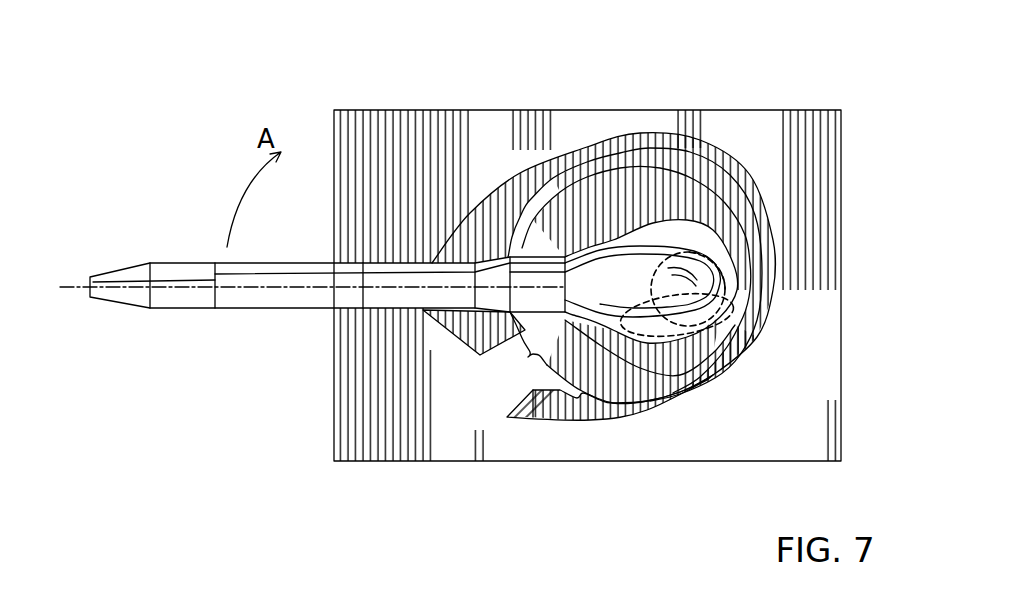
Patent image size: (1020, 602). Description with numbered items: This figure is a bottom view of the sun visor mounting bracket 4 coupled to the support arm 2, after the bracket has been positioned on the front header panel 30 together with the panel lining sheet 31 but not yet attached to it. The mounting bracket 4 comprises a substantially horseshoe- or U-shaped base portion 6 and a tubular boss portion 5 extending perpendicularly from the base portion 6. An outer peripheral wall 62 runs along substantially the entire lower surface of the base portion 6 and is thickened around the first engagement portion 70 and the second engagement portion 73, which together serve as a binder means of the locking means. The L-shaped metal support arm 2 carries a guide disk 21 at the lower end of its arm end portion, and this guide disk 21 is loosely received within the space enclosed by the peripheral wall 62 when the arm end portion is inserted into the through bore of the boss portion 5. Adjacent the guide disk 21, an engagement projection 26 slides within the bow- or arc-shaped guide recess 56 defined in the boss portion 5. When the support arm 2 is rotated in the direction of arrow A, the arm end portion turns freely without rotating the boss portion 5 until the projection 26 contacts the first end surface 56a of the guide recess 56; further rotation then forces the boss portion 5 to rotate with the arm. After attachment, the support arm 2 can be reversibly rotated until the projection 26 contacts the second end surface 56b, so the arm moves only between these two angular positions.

The support arm 2 is at (196, 305).
The sun visor mounting bracket 4 is at (489, 181).
The boss portion 5 is at (745, 248).
The base portion 6 is at (726, 152).
The guide disk 21 is at (620, 190).
The engagement projection 26 is at (705, 335).
The front header panel 30 is at (626, 97).
The panel lining sheet 31 is at (587, 251).
The guide recess 56 is at (745, 325).
The first end surface 56a is at (625, 340).
The second end surface 56b is at (745, 270).
The outer peripheral wall 62 is at (755, 200).
The first engagement portion 70 is at (509, 362).
The second engagement portion 73 is at (575, 443).